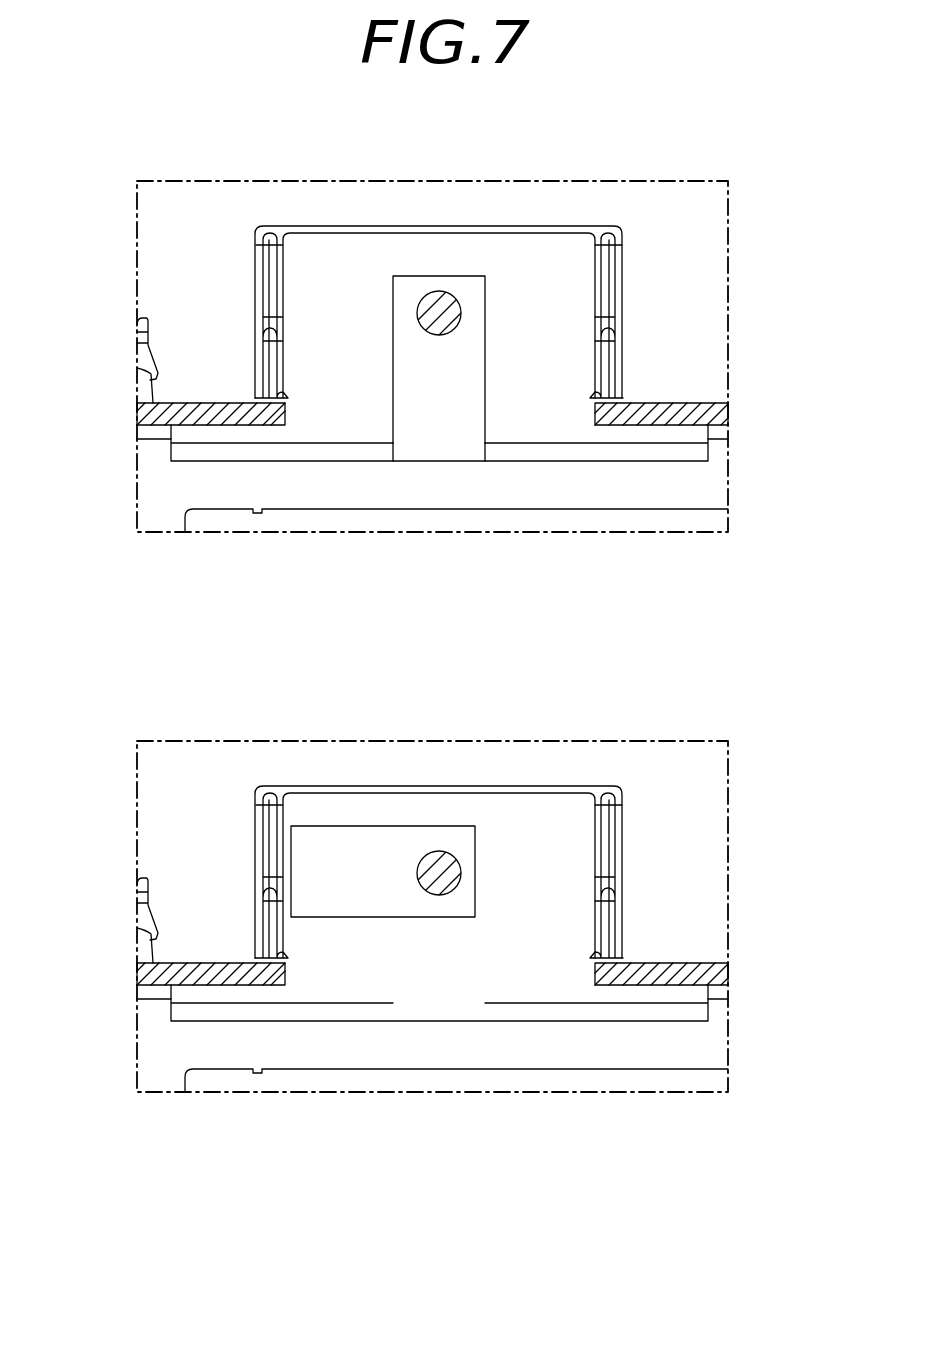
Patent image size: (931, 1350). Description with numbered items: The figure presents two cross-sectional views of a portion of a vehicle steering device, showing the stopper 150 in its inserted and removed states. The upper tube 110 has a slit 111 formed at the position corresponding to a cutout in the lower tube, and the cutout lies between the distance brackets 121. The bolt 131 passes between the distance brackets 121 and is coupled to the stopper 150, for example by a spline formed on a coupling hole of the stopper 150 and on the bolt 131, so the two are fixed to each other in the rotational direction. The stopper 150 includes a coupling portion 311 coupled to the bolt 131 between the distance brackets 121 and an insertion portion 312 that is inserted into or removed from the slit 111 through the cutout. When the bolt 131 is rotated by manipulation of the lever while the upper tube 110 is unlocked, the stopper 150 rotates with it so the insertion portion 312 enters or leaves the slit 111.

The upper tube 110 is at (554, 485).
The slit 111 is at (344, 452).
The distance brackets 121 is at (580, 320).
The bolt 131 is at (437, 312).
The stopper 150 is at (468, 384).
The coupling portion 311 is at (470, 288).
The insertion portion 312 is at (441, 452).